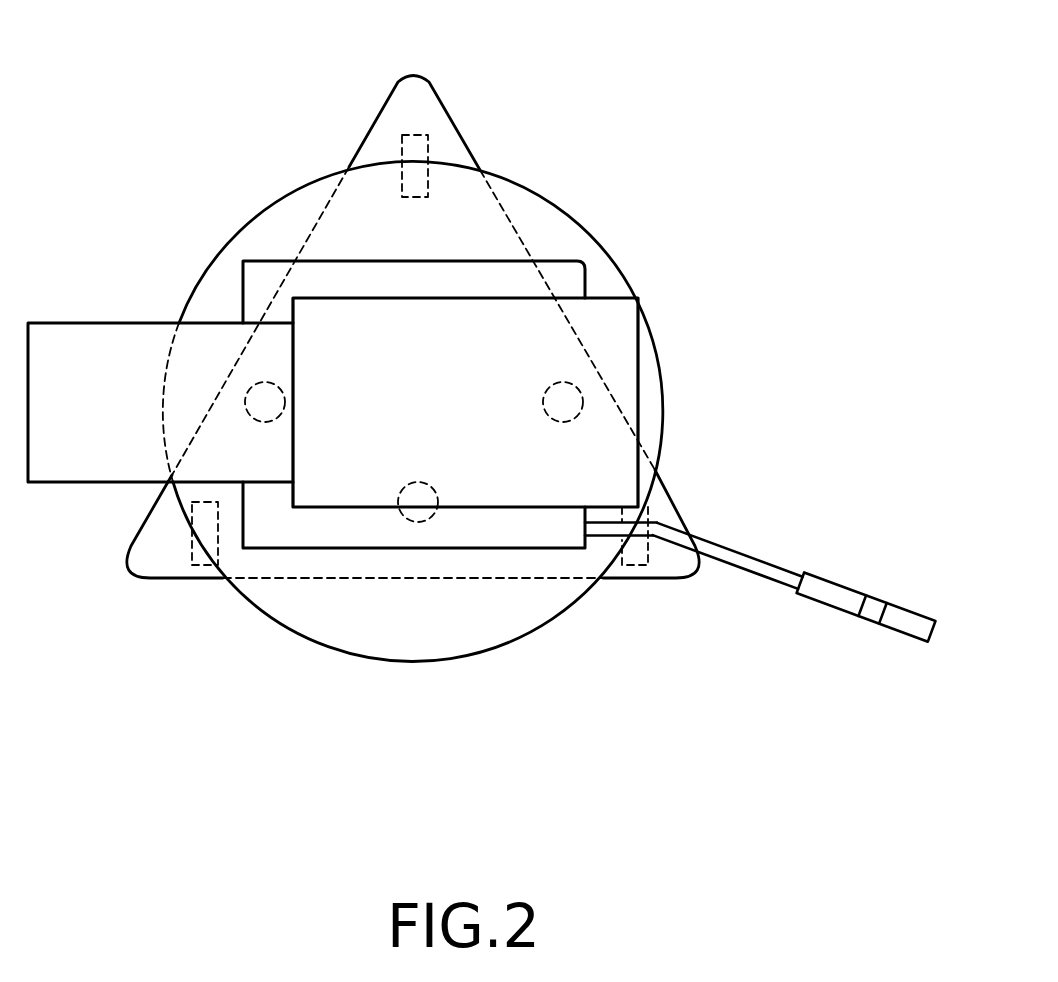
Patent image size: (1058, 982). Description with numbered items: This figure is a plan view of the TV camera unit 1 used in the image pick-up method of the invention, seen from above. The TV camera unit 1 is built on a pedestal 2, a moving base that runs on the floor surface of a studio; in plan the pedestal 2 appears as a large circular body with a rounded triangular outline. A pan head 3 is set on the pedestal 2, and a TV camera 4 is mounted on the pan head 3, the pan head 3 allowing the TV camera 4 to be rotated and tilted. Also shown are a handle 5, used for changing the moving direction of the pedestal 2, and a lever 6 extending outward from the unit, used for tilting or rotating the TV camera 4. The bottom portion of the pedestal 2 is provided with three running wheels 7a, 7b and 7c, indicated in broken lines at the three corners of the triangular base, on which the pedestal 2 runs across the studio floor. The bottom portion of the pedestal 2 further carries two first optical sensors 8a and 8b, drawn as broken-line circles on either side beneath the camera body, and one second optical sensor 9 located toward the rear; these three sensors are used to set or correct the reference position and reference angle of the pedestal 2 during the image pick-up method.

The TV camera unit 1 is at (738, 250).
The pedestal 2 is at (459, 130).
The pan head 3 is at (502, 261).
The TV camera 4 is at (547, 487).
The handle 5 is at (621, 263).
The lever 6 is at (850, 588).
The running wheel 7a is at (662, 580).
The running wheel 7b is at (178, 567).
The running wheel 7c is at (413, 135).
The first optical sensor 8a is at (583, 398).
The first optical sensor 8b is at (246, 393).
The second optical sensor 9 is at (438, 522).